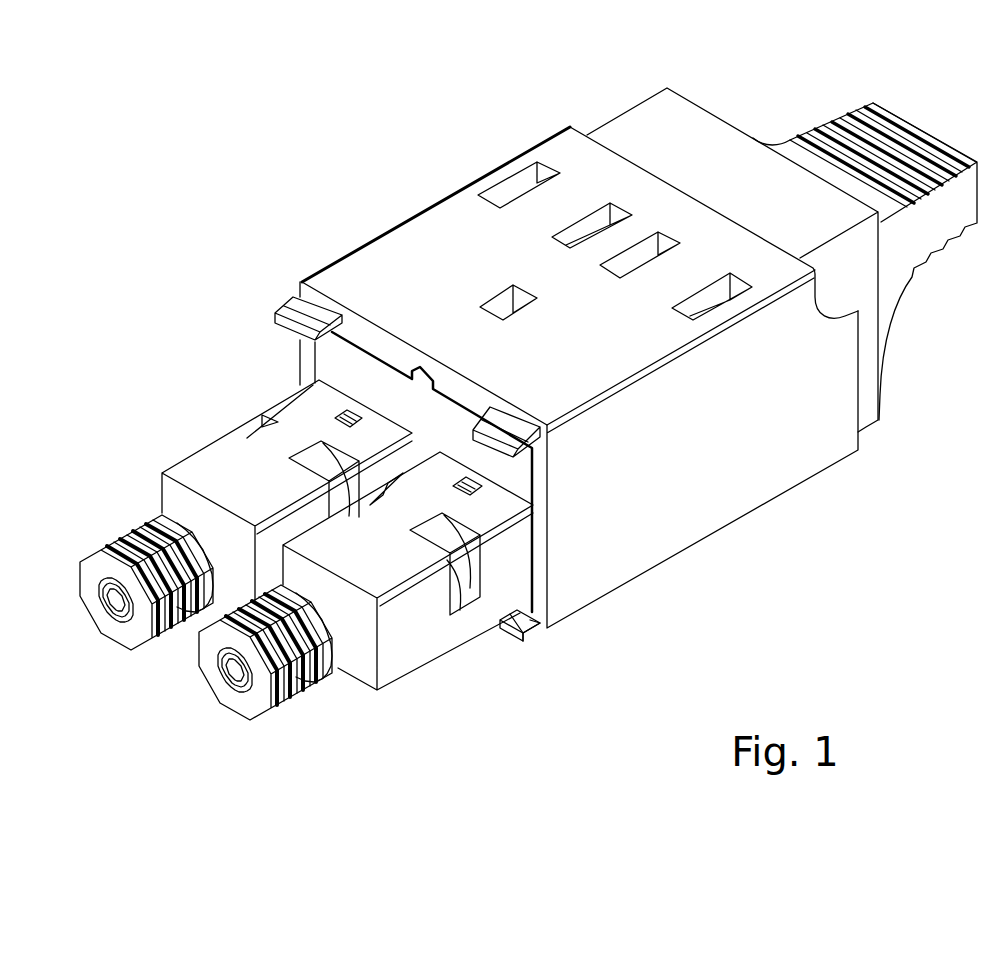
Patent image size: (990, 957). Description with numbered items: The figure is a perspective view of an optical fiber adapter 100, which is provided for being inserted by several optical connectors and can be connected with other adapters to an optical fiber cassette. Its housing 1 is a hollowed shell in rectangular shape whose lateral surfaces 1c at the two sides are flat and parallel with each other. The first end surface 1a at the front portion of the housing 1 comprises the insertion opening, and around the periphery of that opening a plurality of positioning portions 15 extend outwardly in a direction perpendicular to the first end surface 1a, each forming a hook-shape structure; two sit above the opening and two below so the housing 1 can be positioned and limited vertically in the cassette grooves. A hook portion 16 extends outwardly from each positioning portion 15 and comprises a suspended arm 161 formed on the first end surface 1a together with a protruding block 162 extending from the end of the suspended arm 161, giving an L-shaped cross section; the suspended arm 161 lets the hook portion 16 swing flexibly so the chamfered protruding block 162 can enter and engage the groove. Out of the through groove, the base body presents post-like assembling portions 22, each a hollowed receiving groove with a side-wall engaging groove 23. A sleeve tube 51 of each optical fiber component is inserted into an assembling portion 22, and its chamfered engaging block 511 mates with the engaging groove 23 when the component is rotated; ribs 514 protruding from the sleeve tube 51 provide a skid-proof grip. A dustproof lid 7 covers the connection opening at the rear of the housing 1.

The optical fiber adapter 100 is at (884, 618).
The housing 1 is at (700, 543).
The first end surface 1a is at (368, 335).
The lateral surfaces 1c is at (753, 437).
The dustproof lid 7 is at (703, 137).
The positioning portions 15 is at (292, 293).
The hook portion 16 is at (538, 722).
The suspended arm 161 is at (530, 633).
The protruding block 162 is at (522, 633).
The assembling portions 22 is at (203, 465).
The engaging groove 23 is at (248, 432).
The sleeve tube 51 is at (350, 642).
The engaging block 511 is at (453, 593).
The ribs 514 is at (127, 535).